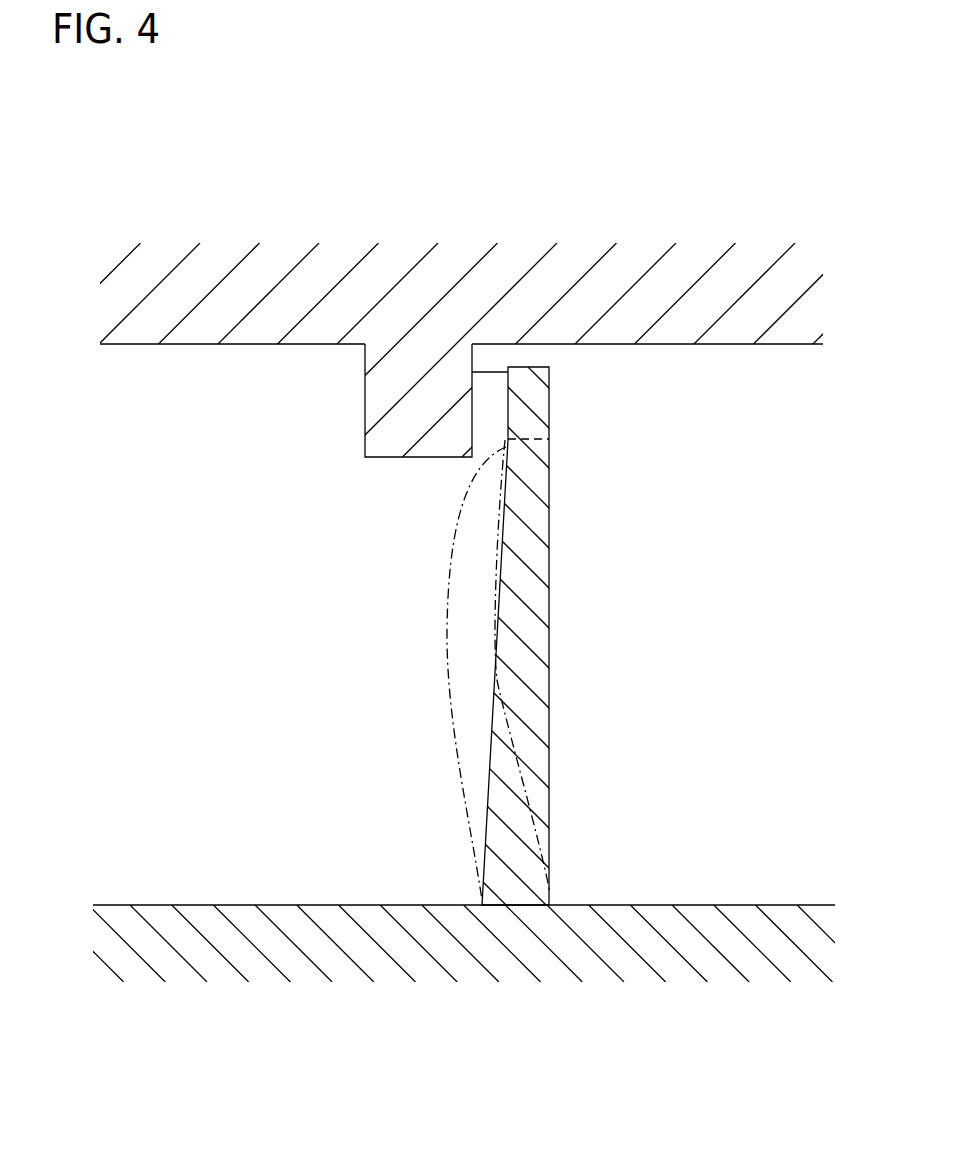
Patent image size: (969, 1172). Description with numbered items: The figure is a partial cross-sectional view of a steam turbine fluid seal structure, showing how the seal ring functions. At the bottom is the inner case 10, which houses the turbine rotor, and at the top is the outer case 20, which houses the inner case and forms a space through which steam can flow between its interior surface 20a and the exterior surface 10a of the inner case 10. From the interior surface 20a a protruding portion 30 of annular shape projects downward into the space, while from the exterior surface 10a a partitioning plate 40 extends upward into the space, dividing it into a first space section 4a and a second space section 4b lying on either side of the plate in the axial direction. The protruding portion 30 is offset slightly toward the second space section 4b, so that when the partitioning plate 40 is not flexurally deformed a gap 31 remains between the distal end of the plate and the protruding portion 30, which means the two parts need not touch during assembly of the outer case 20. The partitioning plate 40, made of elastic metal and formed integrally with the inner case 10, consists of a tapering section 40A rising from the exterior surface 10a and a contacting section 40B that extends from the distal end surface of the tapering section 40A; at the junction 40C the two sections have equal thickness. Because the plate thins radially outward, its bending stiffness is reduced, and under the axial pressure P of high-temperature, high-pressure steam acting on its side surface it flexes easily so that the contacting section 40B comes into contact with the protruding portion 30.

The inner case 10 is at (727, 952).
The exterior surface of the inner case 10a is at (782, 905).
The outer case 20 is at (735, 270).
The interior surface of the outer case 20a is at (768, 346).
The protruding portion 30 is at (383, 393).
The gap 31 is at (490, 363).
The partitioning plate 40 is at (548, 479).
The tapering section 40A is at (523, 683).
The contacting section 40B is at (527, 399).
The junction 40C is at (518, 443).
The pressure P is at (553, 598).
The first space section 4a is at (750, 602).
The second space section 4b is at (282, 610).